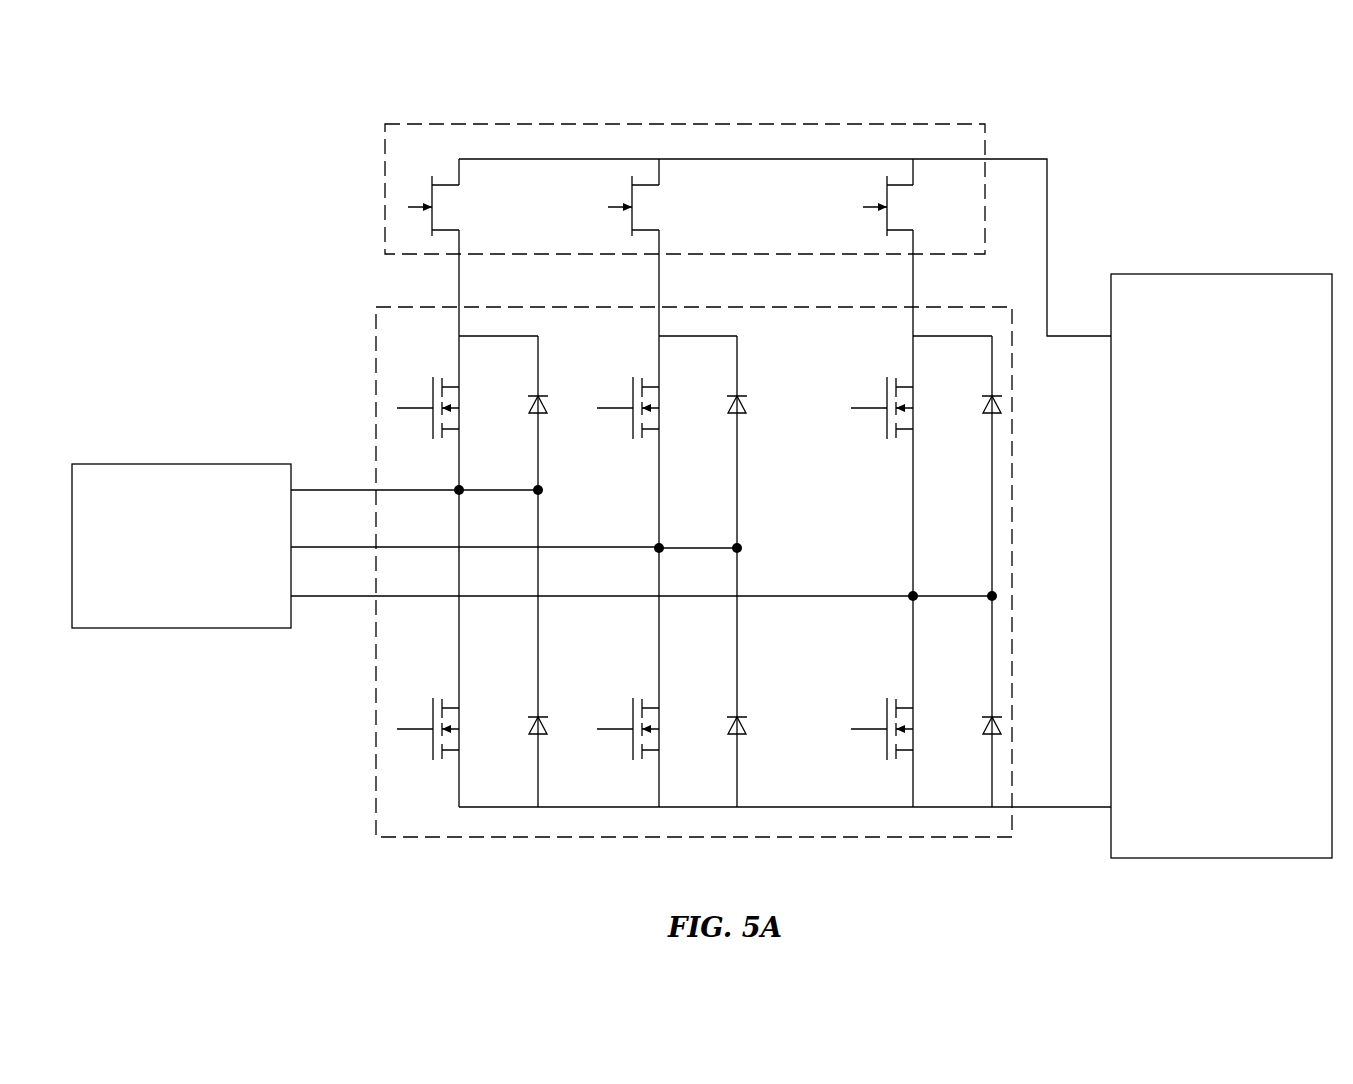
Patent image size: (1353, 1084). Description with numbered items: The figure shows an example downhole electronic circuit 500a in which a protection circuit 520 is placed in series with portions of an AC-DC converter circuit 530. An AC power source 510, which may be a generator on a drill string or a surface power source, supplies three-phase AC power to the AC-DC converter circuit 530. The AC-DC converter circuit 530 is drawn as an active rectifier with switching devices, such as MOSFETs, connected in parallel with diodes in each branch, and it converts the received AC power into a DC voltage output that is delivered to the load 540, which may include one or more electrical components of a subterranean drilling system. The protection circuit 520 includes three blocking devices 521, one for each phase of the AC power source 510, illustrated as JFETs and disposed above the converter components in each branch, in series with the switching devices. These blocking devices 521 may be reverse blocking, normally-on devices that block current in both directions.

The downhole electronic circuit 500a is at (1223, 133).
The AC power source 510 is at (492, 546).
The protection circuit 520 is at (383, 119).
The blocking device 521 is at (860, 193).
The AC-DC converter circuit 530 is at (374, 304).
The load 540 is at (1221, 566).